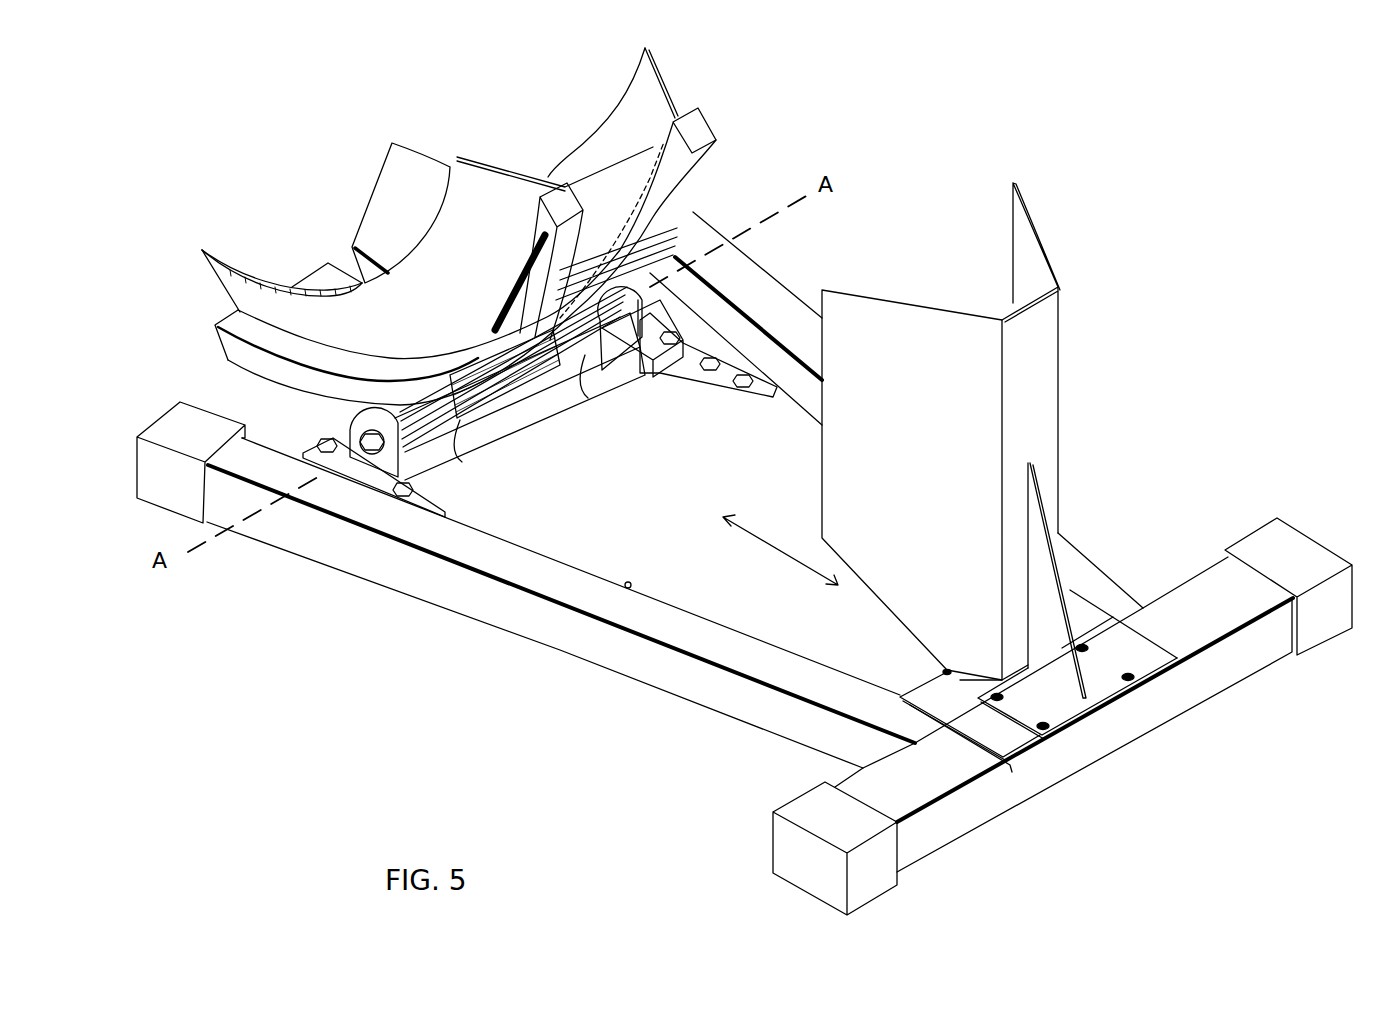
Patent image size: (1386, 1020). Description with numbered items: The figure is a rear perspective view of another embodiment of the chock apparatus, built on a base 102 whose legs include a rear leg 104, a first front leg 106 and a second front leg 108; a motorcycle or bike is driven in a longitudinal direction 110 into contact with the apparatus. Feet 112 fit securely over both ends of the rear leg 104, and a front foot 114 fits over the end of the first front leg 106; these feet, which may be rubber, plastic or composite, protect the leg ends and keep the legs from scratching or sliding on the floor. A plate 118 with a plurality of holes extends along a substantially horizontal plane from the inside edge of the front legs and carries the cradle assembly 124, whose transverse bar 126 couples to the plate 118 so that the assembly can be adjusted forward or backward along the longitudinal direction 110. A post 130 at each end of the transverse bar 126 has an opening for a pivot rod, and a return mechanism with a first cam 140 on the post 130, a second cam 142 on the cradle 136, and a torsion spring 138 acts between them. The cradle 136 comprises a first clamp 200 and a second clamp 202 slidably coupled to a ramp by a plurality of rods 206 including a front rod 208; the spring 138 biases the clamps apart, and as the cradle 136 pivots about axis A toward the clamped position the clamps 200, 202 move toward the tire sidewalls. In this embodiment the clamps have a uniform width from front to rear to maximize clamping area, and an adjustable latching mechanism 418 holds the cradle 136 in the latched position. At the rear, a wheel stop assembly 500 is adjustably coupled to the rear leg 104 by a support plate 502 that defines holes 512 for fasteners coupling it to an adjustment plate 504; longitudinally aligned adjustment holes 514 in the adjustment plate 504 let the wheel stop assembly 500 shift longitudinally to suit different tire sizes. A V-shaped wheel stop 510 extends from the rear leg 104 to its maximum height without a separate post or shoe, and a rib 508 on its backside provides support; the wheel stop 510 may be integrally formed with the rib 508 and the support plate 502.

The base 102 is at (710, 762).
The rear leg 104 is at (947, 838).
The first front leg 106 is at (545, 630).
The second front leg 108 is at (755, 272).
The longitudinal direction 110 is at (763, 542).
The feet 112 is at (820, 870).
The front foot 114 is at (183, 496).
The plate 118 is at (727, 373).
The cradle assembly 124 is at (760, 137).
The transverse bar 126 is at (517, 423).
The post 130 is at (357, 422).
The cradle 136 is at (305, 243).
The torsion spring 138 is at (527, 380).
The first cam 140 is at (427, 443).
The second cam 142 is at (460, 420).
The first clamp 200 is at (670, 108).
The second clamp 202 is at (245, 322).
The plurality of rods 206 is at (613, 258).
The front rod 208 is at (618, 283).
The adjustable latching mechanism 418 is at (631, 583).
The wheel stop assembly 500 is at (1130, 340).
The support plate 502 is at (1072, 706).
The adjustment plate 504 is at (1012, 742).
The rib 508 is at (1066, 649).
The V-shaped wheel stop 510 is at (926, 404).
The holes 512 is at (1043, 724).
The adjustment holes 514 is at (947, 674).